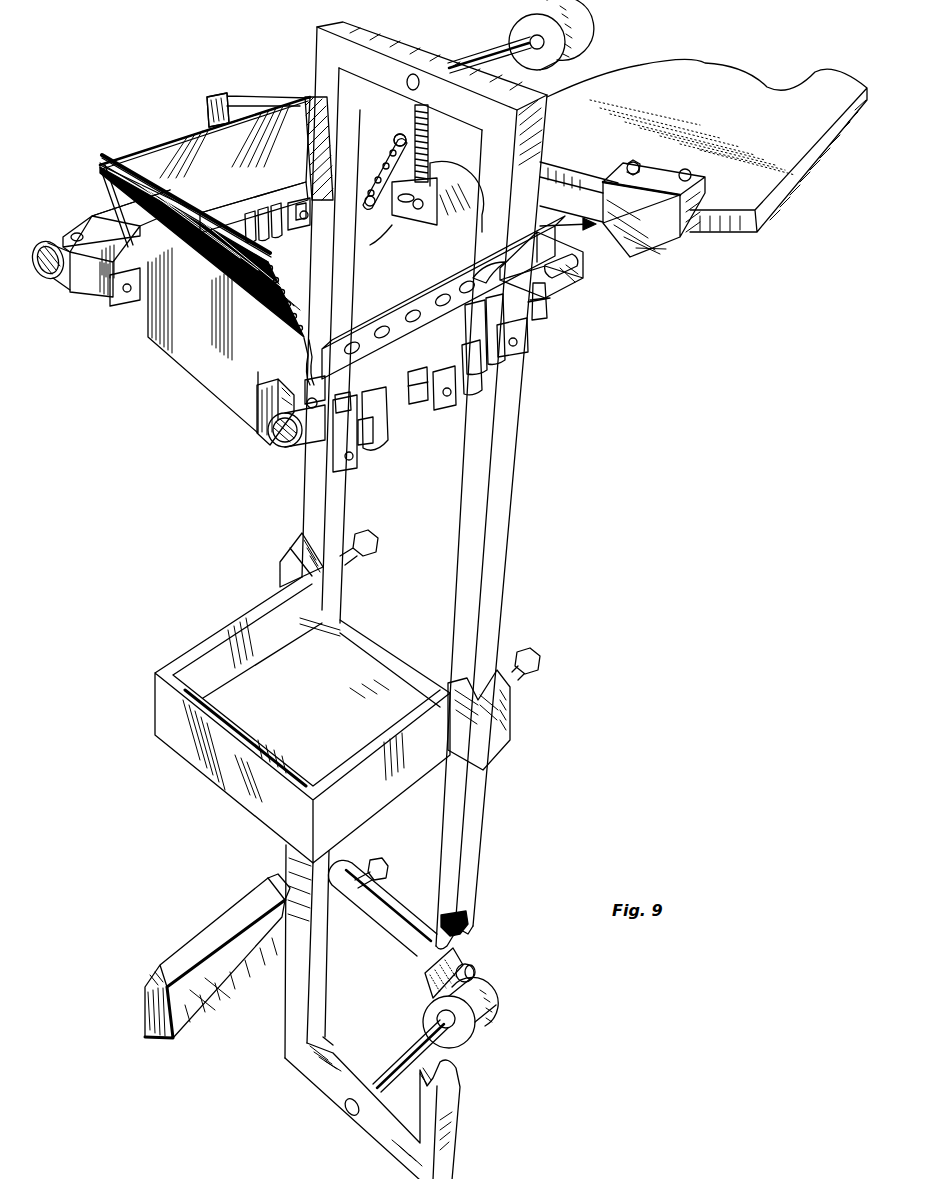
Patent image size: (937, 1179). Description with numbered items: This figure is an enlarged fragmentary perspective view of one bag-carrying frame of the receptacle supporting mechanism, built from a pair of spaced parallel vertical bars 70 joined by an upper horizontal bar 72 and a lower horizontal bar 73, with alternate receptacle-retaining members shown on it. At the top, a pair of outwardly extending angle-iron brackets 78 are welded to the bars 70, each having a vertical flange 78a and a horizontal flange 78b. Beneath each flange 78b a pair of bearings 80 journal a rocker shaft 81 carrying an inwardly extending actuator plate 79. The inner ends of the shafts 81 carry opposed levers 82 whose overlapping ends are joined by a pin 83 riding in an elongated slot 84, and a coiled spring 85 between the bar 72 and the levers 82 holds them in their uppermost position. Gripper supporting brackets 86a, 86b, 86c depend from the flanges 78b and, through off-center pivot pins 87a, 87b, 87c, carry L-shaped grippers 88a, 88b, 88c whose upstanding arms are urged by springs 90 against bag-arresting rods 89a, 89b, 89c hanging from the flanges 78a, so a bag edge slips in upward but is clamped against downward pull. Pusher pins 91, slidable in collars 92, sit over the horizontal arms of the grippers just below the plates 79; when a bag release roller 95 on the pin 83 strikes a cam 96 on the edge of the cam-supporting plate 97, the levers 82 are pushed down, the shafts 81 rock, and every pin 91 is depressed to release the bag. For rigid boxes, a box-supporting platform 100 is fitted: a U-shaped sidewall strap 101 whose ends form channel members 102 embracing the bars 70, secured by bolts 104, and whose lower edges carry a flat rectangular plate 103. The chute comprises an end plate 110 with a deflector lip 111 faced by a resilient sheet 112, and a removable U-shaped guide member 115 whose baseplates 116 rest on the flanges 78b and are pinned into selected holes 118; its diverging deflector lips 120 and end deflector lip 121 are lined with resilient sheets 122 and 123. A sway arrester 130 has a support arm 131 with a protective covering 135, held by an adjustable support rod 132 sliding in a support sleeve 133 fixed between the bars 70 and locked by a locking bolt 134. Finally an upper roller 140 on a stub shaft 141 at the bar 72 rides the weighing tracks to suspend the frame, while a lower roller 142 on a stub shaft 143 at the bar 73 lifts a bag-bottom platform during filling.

The vertical bar 70 is at (486, 506).
The upper horizontal bar 72 is at (395, 48).
The lower horizontal bar 73 is at (365, 1122).
The bracket 78 is at (428, 310).
The vertical flange 78a is at (68, 232).
The horizontal flange 78b is at (95, 228).
The actuator plate 79 is at (306, 362).
The bearing 80 is at (40, 258).
The rocker shaft 81 is at (55, 272).
The lever 82 is at (225, 112).
The pin 83 is at (388, 170).
The elongated slot 84 is at (402, 210).
The coiled spring 85 is at (414, 124).
The gripper supporting bracket 86a is at (118, 305).
The gripper supporting bracket 86b is at (240, 225).
The gripper supporting bracket 86c is at (285, 196).
The pivot pin 87a is at (130, 298).
The pivot pin 87b is at (458, 398).
The pivot pin 87c is at (552, 362).
The L-shaped gripper 88a is at (385, 442).
The L-shaped gripper 88b is at (262, 236).
The L-shaped gripper 88c is at (518, 342).
The bag-arresting rod 89a is at (375, 432).
The bag-arresting rod 89b is at (364, 297).
The bag-arresting rod 89c is at (540, 380).
The spring 90 is at (440, 345).
The pusher pin 91 is at (306, 382).
The collar 92 is at (320, 400).
The bag release roller 95 is at (478, 222).
The cam 96 is at (665, 168).
The cam-supporting plate 97 is at (727, 88).
The box-supporting platform 100 is at (297, 720).
The U-shaped sidewall strap 101 is at (248, 800).
The channel member 102 is at (280, 563).
The flat rectangular plate 103 is at (232, 684).
The bolt 104 is at (378, 546).
The end plate 110 is at (196, 345).
The deflector lip 111 is at (232, 272).
The resilient sheet 112 is at (205, 155).
The U-shaped guide member 115 is at (157, 150).
The baseplate 116 is at (104, 212).
The hole 118 is at (541, 265).
The deflector lip 120 is at (105, 175).
The end deflector lip 121 is at (384, 150).
The resilient sheet 122 is at (200, 150).
The resilient sheet 123 is at (312, 110).
The sway arrester 130 is at (190, 958).
The support arm 131 is at (285, 882).
The adjustable support rod 132 is at (472, 966).
The support sleeve 133 is at (385, 928).
The locking bolt 134 is at (385, 862).
The protective covering 135 is at (225, 930).
The upper roller 140 is at (590, 38).
The stub shaft 141 is at (498, 48).
The lower roller 142 is at (482, 998).
The stub shaft 143 is at (400, 1060).